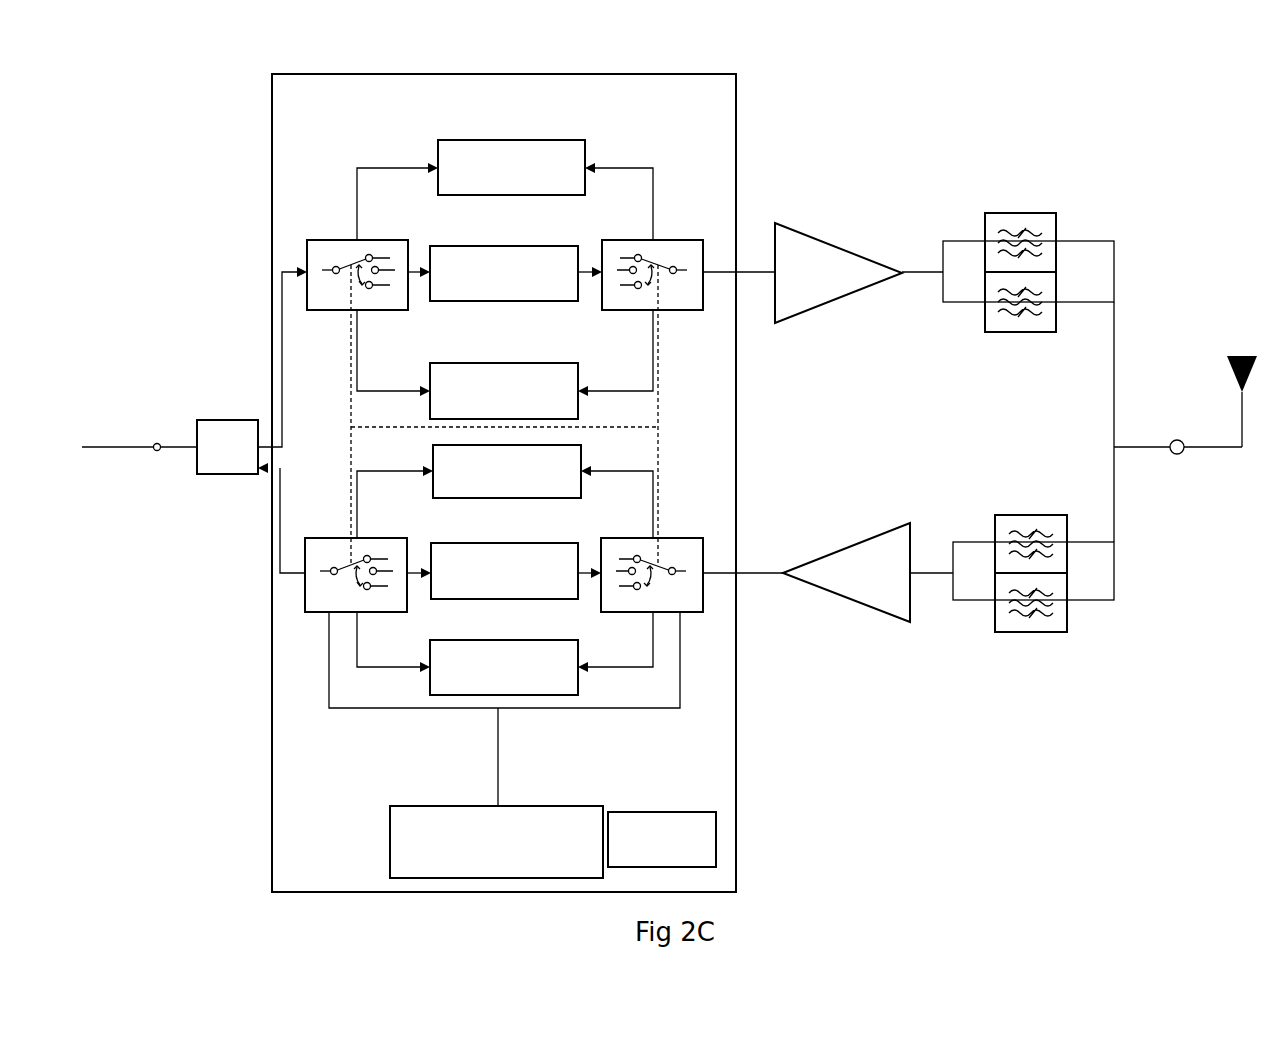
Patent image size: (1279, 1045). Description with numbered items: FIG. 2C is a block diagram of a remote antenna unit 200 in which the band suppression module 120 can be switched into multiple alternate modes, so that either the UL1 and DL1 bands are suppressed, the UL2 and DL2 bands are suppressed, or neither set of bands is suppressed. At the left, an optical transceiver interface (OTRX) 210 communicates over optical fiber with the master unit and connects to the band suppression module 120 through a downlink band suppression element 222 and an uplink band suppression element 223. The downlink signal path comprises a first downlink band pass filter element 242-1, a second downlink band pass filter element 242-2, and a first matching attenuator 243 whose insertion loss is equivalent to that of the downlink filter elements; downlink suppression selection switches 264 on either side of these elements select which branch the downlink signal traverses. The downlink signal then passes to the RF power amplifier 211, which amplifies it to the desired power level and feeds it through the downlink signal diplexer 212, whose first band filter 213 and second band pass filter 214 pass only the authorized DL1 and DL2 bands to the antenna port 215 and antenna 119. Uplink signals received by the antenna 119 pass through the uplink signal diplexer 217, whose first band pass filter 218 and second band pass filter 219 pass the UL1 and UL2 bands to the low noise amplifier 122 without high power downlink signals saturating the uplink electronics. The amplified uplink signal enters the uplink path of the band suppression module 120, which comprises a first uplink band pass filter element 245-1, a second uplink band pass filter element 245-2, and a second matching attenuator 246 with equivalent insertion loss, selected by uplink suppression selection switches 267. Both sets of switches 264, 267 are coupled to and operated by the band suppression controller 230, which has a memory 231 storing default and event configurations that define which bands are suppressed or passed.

The remote antenna unit 200 is at (1124, 92).
The band suppression module 120 is at (504, 483).
The optical transceiver interface 210 is at (227, 477).
The switchable RF downlink band suppression element 222 is at (290, 226).
The switchable RF uplink band suppression element 223 is at (283, 622).
The downlink suppression selection switches 264 is at (333, 240).
The first downlink band pass filter element 242-1 is at (512, 195).
The second downlink band pass filter element 242-2 is at (498, 363).
The first matching attenuator 243 is at (480, 301).
The uplink suppression selection switches 267 is at (327, 538).
The first uplink band pass filter element 245-1 is at (507, 498).
The second uplink band pass filter element 245-2 is at (498, 640).
The second matching attenuator 246 is at (477, 599).
The RF power amplifier 211 is at (810, 308).
The downlink signal diplexer 212 is at (983, 315).
The first band filter 213 is at (1056, 228).
The second band pass filter 214 is at (1056, 292).
The antenna port 215 is at (1177, 455).
The antenna 119 is at (1239, 352).
The low noise amplifier 122 is at (883, 612).
The uplink signal diplexer 217 is at (993, 627).
The first band pass filter 218 is at (1067, 555).
The second band pass filter 219 is at (1067, 617).
The band suppression controller 230 is at (496, 842).
The memory 231 is at (662, 839).